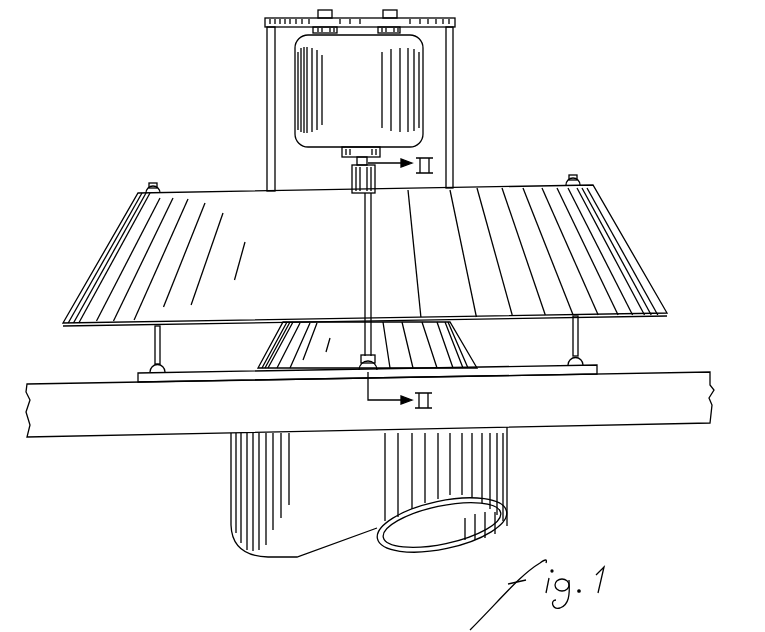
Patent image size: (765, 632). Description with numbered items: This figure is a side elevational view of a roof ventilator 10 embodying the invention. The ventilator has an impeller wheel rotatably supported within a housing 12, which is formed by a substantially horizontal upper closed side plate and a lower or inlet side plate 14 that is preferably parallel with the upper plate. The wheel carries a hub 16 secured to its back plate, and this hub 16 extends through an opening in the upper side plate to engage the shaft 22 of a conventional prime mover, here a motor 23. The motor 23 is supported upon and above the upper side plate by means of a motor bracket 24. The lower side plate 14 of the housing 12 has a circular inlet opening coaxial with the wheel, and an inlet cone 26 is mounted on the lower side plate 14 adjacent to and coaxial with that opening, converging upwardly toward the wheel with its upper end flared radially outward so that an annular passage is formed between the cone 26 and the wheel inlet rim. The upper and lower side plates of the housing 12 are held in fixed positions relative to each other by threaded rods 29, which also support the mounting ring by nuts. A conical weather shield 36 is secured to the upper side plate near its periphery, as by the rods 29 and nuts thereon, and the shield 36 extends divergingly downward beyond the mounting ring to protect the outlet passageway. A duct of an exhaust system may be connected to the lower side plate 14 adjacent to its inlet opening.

The roof ventilator 10 is at (496, 156).
The housing 12 is at (606, 193).
The lower or inlet side plate 14 is at (187, 376).
The hub 16 is at (352, 187).
The shaft 22 is at (356, 163).
The motor 23 is at (310, 79).
The motor bracket 24 is at (448, 52).
The inlet cone 26 is at (462, 352).
The threaded rods 29 is at (152, 340).
The conical weather shield 36 is at (625, 262).